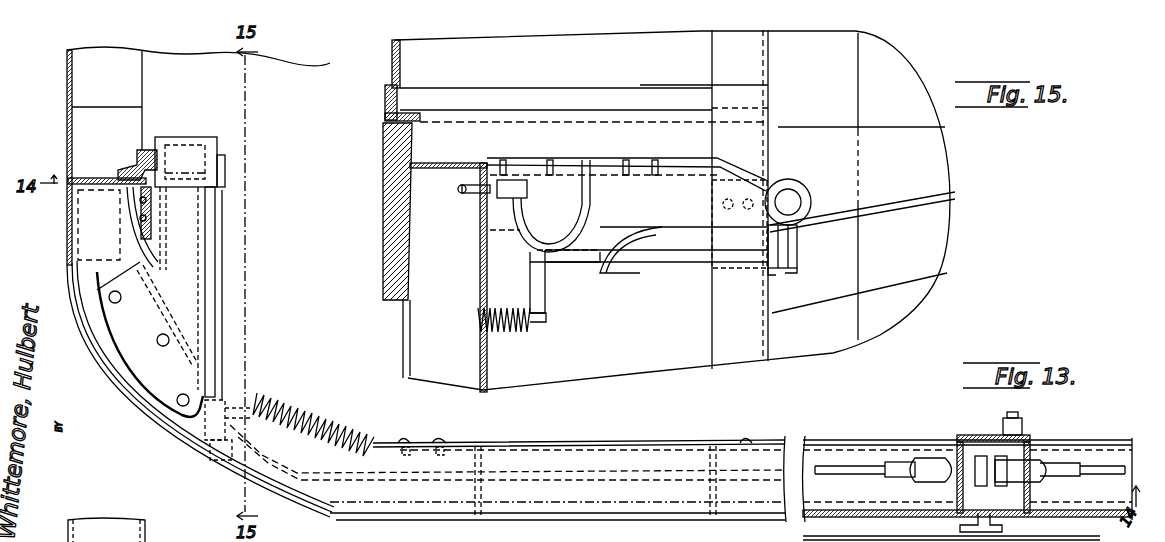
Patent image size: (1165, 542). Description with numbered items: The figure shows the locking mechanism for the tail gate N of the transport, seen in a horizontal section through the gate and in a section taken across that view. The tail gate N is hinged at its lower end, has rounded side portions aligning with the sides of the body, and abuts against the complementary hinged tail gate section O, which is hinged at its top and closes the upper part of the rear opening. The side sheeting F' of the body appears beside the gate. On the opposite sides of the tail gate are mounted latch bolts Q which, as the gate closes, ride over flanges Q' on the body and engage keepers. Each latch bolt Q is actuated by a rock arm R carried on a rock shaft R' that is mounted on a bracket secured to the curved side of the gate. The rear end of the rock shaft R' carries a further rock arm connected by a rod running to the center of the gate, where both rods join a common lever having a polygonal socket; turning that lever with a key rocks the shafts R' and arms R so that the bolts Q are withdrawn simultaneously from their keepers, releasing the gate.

In FIG. 13, the frame wall F' is at (178, 283).
In FIG. 13, the latch bolt Q is at (161, 321).
In FIG. 15, the latch bolt Q is at (800, 197).
In FIG. 13, the flange Q' is at (204, 364).
In FIG. 15, the flange Q' is at (628, 240).
In FIG. 13, the rock arm R is at (214, 158).
In FIG. 15, the rock arm R is at (656, 216).
In FIG. 13, the rock shaft R' is at (241, 293).
In FIG. 15, the rock shaft R' is at (628, 266).
In FIG. 13, the tail gate N is at (612, 520).
In FIG. 15, the tail gate N is at (405, 346).
In FIG. 15, the tail gate section O is at (390, 70).